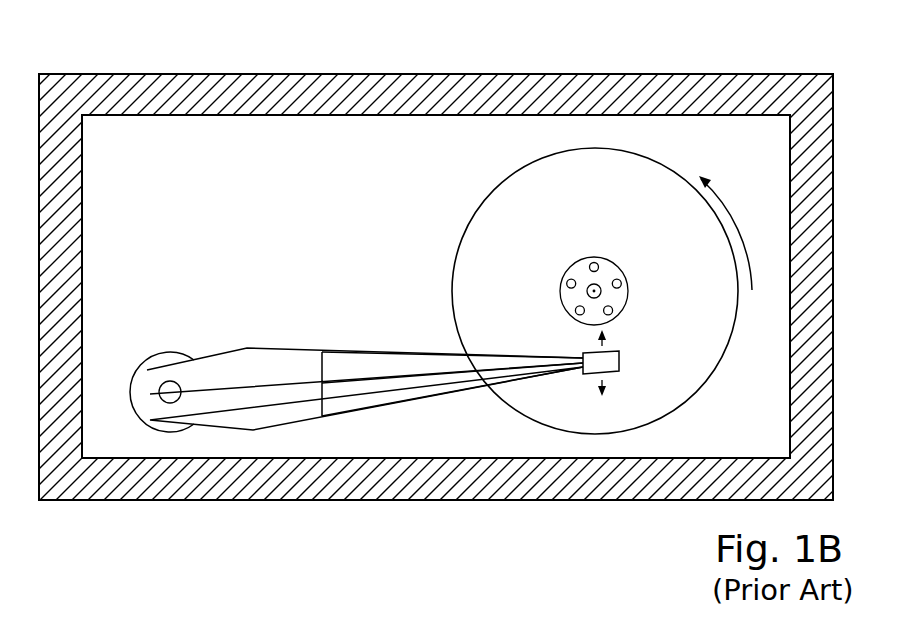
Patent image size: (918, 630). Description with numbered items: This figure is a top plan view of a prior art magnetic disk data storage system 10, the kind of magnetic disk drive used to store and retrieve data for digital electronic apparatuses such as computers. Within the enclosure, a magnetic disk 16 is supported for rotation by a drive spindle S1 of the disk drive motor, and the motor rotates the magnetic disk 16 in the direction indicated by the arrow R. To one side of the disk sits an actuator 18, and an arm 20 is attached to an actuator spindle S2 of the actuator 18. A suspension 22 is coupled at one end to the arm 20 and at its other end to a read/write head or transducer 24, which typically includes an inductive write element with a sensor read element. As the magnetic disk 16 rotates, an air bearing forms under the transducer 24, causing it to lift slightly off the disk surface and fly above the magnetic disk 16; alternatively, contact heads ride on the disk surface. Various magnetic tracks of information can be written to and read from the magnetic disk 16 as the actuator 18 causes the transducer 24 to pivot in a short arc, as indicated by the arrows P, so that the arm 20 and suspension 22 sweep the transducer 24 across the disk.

The magnetic disk data storage system 10 is at (808, 61).
The magnetic disk 16 is at (616, 208).
The actuator 18 is at (174, 358).
The arm 20 is at (292, 362).
The suspension 22 is at (393, 393).
The read/write head or transducer 24 is at (619, 362).
The drive spindle S1 is at (618, 268).
The actuator spindle S2 is at (168, 403).
The arrow indicating disk rotation R is at (731, 233).
The arrows indicating transducer pivot P is at (613, 362).